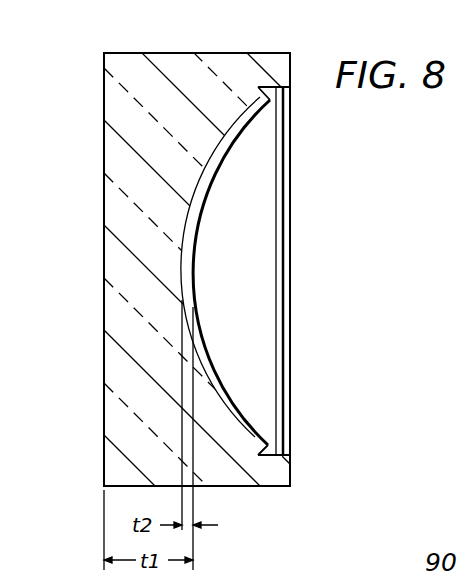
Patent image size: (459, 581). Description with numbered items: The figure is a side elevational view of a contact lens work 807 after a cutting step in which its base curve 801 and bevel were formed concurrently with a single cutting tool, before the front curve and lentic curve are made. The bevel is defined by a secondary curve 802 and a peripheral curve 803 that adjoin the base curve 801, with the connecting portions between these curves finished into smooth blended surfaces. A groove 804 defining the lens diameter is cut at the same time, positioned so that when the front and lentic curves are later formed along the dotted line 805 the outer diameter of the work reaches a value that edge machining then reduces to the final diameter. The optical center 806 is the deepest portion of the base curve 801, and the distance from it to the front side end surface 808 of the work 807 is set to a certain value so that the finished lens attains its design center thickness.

The base curve 801 is at (203, 202).
The secondary curve 802 is at (264, 126).
The peripheral curve 803 is at (272, 108).
The groove 804 is at (270, 455).
The dotted line 805 is at (200, 186).
The optical center 806 is at (193, 273).
The work 807 is at (130, 70).
The front side end surface 808 is at (104, 437).